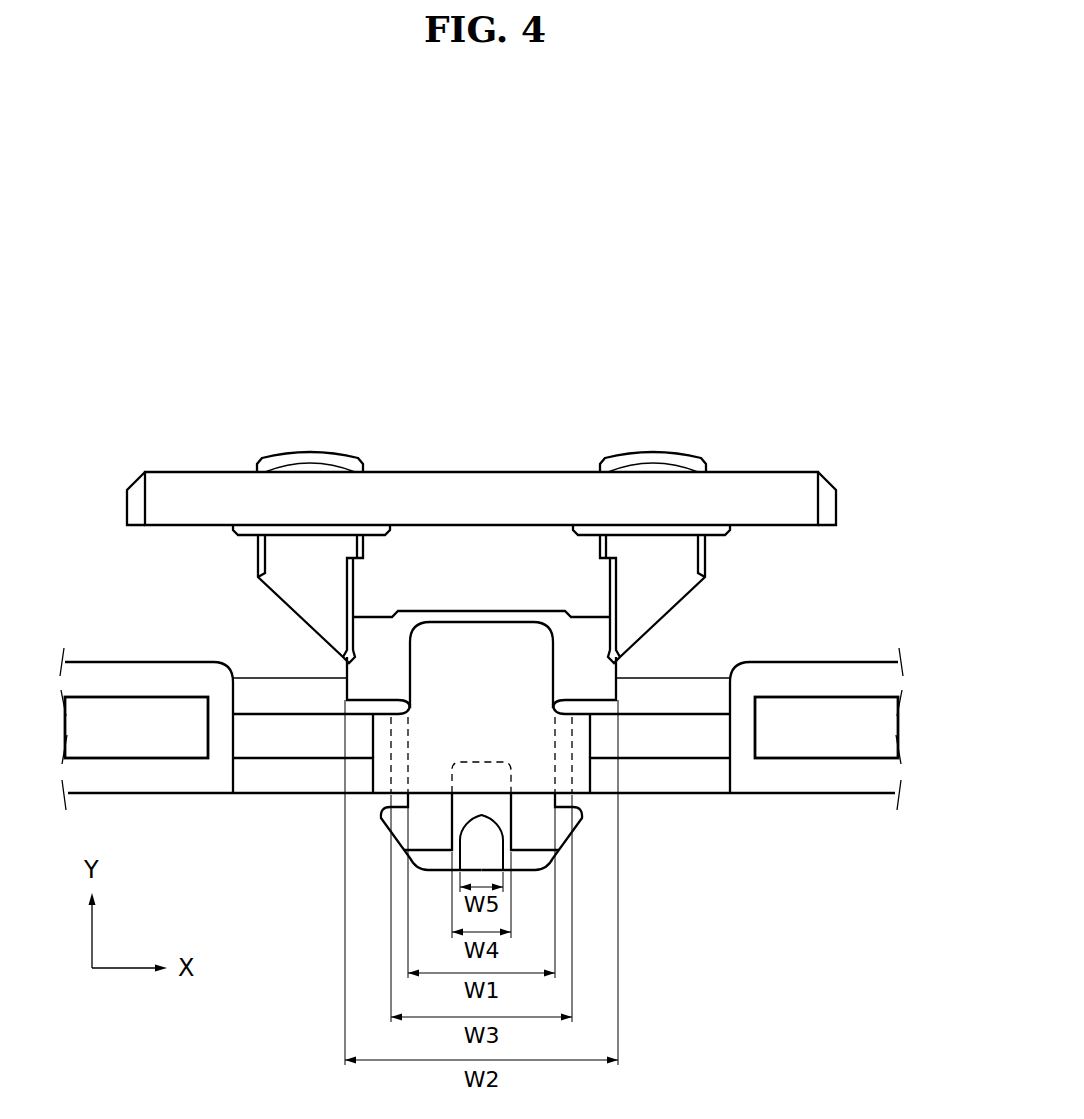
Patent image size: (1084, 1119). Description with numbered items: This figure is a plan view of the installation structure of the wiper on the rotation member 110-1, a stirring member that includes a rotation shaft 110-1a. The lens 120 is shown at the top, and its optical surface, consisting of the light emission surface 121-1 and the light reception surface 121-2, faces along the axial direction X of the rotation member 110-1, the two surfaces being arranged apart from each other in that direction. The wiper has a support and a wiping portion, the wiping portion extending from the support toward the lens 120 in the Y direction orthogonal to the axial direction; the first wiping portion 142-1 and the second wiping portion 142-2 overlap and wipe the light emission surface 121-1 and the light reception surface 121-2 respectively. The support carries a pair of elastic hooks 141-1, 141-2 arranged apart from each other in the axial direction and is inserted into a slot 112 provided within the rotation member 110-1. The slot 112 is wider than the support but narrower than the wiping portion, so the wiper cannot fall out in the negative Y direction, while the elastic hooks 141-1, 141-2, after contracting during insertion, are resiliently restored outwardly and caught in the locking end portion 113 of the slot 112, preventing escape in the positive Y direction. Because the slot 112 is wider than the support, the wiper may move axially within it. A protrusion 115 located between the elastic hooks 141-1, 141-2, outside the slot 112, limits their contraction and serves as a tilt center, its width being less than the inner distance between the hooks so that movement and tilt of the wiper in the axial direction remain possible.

The lens 120 is at (849, 466).
The light emission surface 121-1 is at (357, 586).
The light reception surface 121-2 is at (606, 586).
The first wiping portion 142-1 is at (345, 670).
The second wiping portion 142-2 is at (618, 670).
The slot 112 is at (398, 745).
The locking end portion 113 is at (375, 795).
The rotation member 110-1 is at (487, 782).
The rotation shaft 110-1a is at (765, 797).
The elastic hook 141-1 is at (380, 818).
The elastic hook 141-2 is at (582, 817).
The protrusion 115 is at (490, 855).